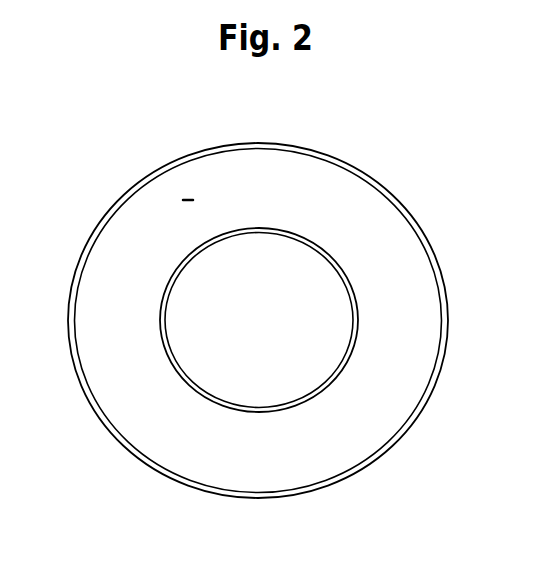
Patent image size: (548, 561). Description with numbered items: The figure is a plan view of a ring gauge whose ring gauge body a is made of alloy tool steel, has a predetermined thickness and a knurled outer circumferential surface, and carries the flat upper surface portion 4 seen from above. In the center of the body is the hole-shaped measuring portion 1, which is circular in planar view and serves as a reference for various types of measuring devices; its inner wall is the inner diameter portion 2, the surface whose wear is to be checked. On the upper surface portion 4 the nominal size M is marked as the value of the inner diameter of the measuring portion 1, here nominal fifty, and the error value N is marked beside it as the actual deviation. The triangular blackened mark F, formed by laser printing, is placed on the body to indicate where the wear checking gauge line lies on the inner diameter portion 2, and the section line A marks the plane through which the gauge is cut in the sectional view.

The hole-shaped measuring portion 1 is at (198, 335).
The inner diameter portion 2 is at (328, 385).
The upper surface portion 4 is at (105, 283).
The nominal size M is at (257, 166).
The error value N is at (292, 188).
The ring gauge body a is at (380, 208).
The triangular blackened mark F is at (389, 317).
The section line A- A is at (195, 100).